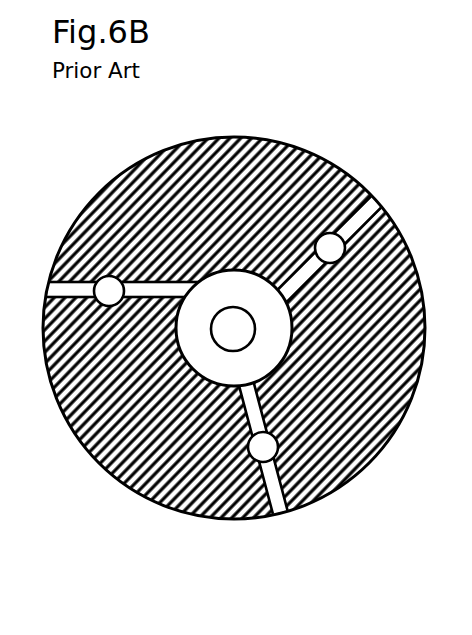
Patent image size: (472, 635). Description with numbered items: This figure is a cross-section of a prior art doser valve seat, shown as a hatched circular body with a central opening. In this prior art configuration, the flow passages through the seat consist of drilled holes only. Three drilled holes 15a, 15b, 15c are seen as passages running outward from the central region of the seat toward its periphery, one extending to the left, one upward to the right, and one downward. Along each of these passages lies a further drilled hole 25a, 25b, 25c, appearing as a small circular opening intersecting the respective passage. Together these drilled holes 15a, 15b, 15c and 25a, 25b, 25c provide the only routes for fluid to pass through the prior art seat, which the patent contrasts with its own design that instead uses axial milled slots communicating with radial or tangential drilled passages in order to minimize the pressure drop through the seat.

The drilled hole 15a is at (170, 290).
The drilled hole 15b is at (300, 275).
The drilled hole 15c is at (162, 498).
The drilled hole 25a is at (109, 291).
The drilled hole 25b is at (329, 247).
The drilled hole 25c is at (264, 448).